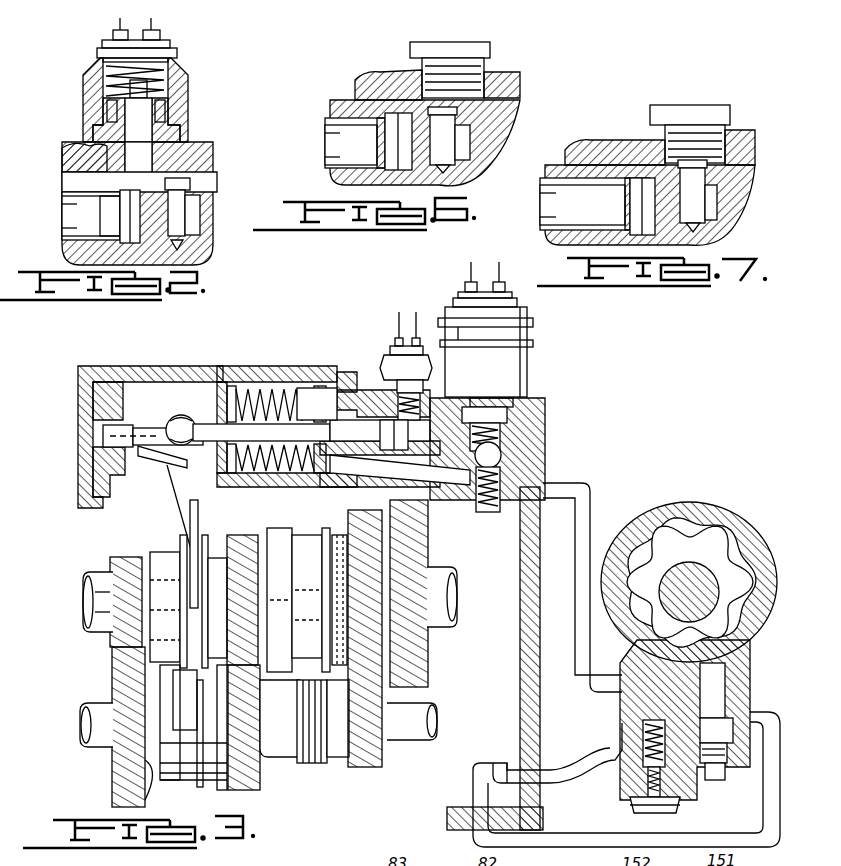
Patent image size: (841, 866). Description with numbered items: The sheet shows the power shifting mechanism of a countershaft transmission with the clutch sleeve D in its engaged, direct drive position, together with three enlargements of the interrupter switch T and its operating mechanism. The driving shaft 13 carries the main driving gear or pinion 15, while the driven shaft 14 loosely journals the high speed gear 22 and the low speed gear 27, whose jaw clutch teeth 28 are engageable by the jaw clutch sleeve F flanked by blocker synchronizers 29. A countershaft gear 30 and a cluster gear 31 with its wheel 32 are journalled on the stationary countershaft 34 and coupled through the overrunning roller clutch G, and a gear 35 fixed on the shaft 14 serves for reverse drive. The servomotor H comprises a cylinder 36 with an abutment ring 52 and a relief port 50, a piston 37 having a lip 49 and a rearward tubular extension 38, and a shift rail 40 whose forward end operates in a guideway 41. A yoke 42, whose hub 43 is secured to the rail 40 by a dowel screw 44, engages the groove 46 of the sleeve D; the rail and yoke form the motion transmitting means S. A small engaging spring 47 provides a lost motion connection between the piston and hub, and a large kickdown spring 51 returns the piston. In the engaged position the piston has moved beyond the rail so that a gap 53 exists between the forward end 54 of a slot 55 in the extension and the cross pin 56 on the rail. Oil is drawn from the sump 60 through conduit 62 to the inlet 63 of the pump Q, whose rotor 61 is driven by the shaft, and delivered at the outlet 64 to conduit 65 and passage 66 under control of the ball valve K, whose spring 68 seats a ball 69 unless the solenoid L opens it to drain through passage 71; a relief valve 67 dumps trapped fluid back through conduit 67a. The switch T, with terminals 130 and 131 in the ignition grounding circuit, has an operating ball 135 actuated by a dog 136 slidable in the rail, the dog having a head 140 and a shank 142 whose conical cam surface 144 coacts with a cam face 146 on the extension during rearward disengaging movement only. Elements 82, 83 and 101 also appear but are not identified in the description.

In FIG. 5, the terminal 130 is at (112, 35).
In FIG. 5, the terminal 131 is at (160, 33).
In FIG. 5, the interrupter switch T is at (188, 76).
In FIG. 6, the interrupter switch T is at (490, 50).
In FIG. 7, the interrupter switch T is at (716, 110).
In FIG. 3, the interrupter switch T is at (425, 370).
In FIG. 5, the operating element or ball 135 is at (145, 126).
In FIG. 6, the operating element or ball 135 is at (497, 84).
In FIG. 7, the operating element or ball 135 is at (735, 130).
In FIG. 3, the operating element or ball 135 is at (438, 392).
In FIG. 5, the slot 55 is at (188, 147).
In FIG. 7, the slot 55 is at (696, 147).
In FIG. 3, the slot 55 is at (406, 366).
In FIG. 5, the forward end of slot 54 is at (84, 157).
In FIG. 6, the forward end of slot 54 is at (372, 85).
In FIG. 7, the forward end of slot 54 is at (615, 152).
In FIG. 3, the forward end of slot 54 is at (317, 404).
In FIG. 6, the gap 53 is at (418, 95).
In FIG. 3, the gap 53 is at (400, 430).
In FIG. 6, the abutment ring 52 is at (390, 81).
In FIG. 5, the tubular extension 38 is at (68, 188).
In FIG. 6, the tubular extension 38 is at (345, 112).
In FIG. 7, the tubular extension 38 is at (550, 238).
In FIG. 5, the shift rail 40 is at (70, 215).
In FIG. 6, the shift rail 40 is at (330, 134).
In FIG. 7, the shift rail 40 is at (542, 211).
In FIG. 3, the shift rail 40 is at (364, 430).
In FIG. 5, the cross pin 56 is at (112, 222).
In FIG. 6, the cross pin 56 is at (380, 146).
In FIG. 7, the cross pin 56 is at (622, 204).
In FIG. 3, the cross pin 56 is at (350, 427).
In FIG. 5, the dog or pin switch actuator 136 is at (198, 206).
In FIG. 6, the dog or pin switch actuator 136 is at (490, 132).
In FIG. 7, the dog or pin switch actuator 136 is at (720, 186).
In FIG. 3, the dog or pin switch actuator 136 is at (410, 432).
In FIG. 5, the head portion 140 is at (190, 165).
In FIG. 6, the head portion 140 is at (500, 112).
In FIG. 7, the head portion 140 is at (745, 160).
In FIG. 5, the shank 142 is at (186, 184).
In FIG. 6, the shank 142 is at (470, 140).
In FIG. 7, the shank 142 is at (715, 200).
In FIG. 5, the cam surface 144 is at (200, 226).
In FIG. 6, the cam surface 144 is at (470, 158).
In FIG. 7, the cam surface 144 is at (716, 214).
In FIG. 5, the cam face 146 is at (196, 242).
In FIG. 6, the cam face 146 is at (462, 180).
In FIG. 7, the cam face 146 is at (706, 233).
In FIG. 3, the guideway 41 is at (88, 410).
In FIG. 3, the servomotor H is at (246, 385).
In FIG. 3, the hub portion 43 is at (143, 426).
In FIG. 3, the dowel screw 44 is at (181, 415).
In FIG. 3, the engaging spring 47 is at (208, 436).
In FIG. 3, the kickdown spring 51 is at (250, 388).
In FIG. 3, the piston 37 is at (258, 388).
In FIG. 3, the lip 49 is at (312, 386).
In FIG. 3, the yoke 42 is at (172, 485).
In FIG. 3, the motion transmitting means S is at (160, 470).
In FIG. 3, the cylinder 36 is at (254, 480).
In FIG. 3, the relief port 50 is at (283, 480).
In FIG. 3, the jaw clutch sleeve F is at (302, 512).
In FIG. 3, the passage 71 is at (447, 439).
In FIG. 3, the solenoid L is at (528, 352).
In FIG. 3, the solenoid terminal 83 is at (462, 280).
In FIG. 3, the solenoid terminal 82 is at (505, 280).
In FIG. 3, the ball valve K is at (516, 424).
In FIG. 3, the ball 69 is at (502, 444).
In FIG. 3, the valve spring 68 is at (500, 463).
In FIG. 3, the passage 66 is at (416, 482).
In FIG. 3, the main driving gear or pinion 15 is at (118, 556).
In FIG. 3, the countershaft gear 30 is at (118, 770).
In FIG. 3, the driving shaft 13 is at (98, 599).
In FIG. 3, the countershaft 34 is at (98, 722).
In FIG. 3, the jaw clutch sleeve D is at (165, 553).
In FIG. 3, the groove 46 is at (206, 520).
In FIG. 3, the high or third speed gear 22 is at (232, 532).
In FIG. 3, the cluster gear wheel 32 is at (242, 788).
In FIG. 3, the overrunning roller clutch G is at (178, 782).
In FIG. 3, the jaw clutch teeth 28 is at (328, 570).
In FIG. 3, the blocker synchronizers 29 is at (334, 594).
In FIG. 3, the splined shaft 101 is at (318, 768).
In FIG. 3, the cluster gear 31 is at (282, 768).
In FIG. 3, the low or first speed gear 27 is at (365, 629).
In FIG. 3, the gear 35 is at (410, 530).
In FIG. 3, the driven shaft 14 is at (445, 593).
In FIG. 3, the supply source 60 is at (417, 739).
In FIG. 3, the conduit 65 is at (540, 660).
In FIG. 3, the pump outlet 64 is at (625, 660).
In FIG. 3, the pump Q is at (725, 535).
In FIG. 3, the rotor 61 is at (728, 560).
In FIG. 3, the pump inlet 63 is at (735, 680).
In FIG. 3, the relief valve 67 is at (645, 742).
In FIG. 3, the conduit 67a is at (586, 748).
In FIG. 3, the conduit 62 is at (612, 822).